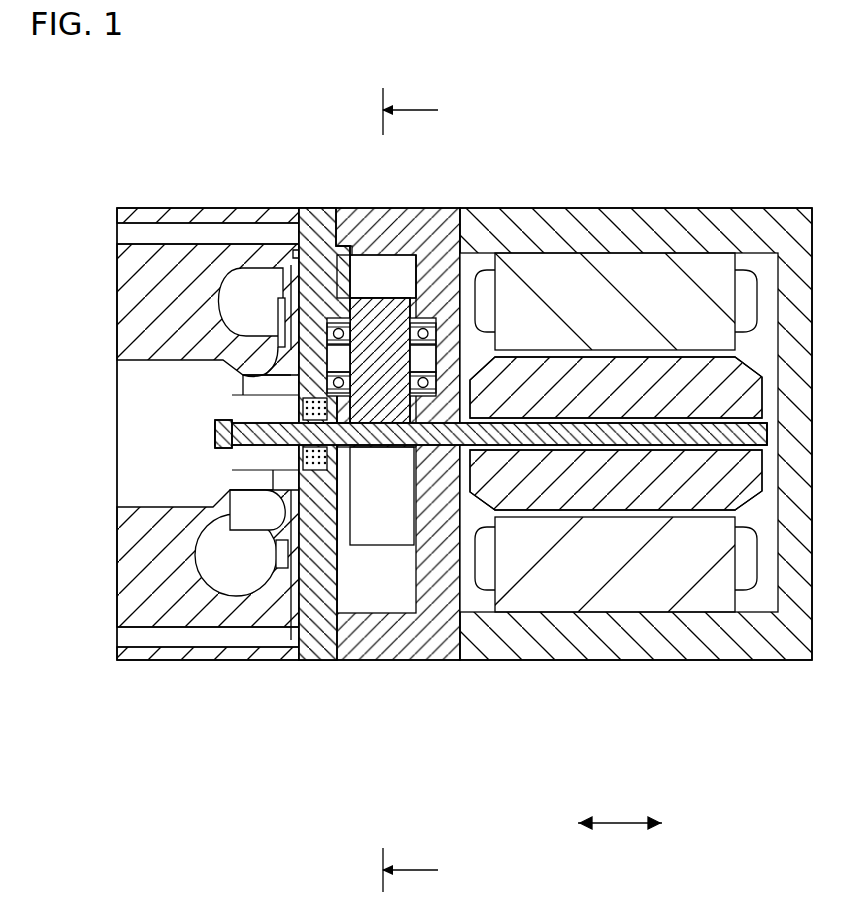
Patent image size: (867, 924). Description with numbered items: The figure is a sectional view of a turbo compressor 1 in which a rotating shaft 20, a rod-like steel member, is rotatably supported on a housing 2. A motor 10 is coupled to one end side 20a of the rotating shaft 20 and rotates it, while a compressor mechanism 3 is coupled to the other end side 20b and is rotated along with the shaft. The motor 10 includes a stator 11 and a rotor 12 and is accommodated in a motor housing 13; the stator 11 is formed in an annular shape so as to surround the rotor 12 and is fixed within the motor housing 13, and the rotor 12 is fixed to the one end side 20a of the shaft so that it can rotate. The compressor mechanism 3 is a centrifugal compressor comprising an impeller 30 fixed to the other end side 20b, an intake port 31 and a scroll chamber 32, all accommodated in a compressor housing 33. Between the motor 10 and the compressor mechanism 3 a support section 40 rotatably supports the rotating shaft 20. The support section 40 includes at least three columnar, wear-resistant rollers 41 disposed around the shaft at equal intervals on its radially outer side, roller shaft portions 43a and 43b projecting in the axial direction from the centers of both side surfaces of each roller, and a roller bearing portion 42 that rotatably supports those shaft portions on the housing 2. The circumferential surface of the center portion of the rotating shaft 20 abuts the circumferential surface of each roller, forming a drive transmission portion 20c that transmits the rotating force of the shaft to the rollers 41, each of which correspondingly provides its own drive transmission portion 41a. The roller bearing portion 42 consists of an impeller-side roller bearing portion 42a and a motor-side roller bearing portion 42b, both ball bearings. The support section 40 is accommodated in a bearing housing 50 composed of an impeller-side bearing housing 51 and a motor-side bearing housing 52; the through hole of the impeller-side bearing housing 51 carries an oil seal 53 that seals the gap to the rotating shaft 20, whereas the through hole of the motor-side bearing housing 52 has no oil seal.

The turbo compressor 1 is at (715, 143).
The housing 2 is at (482, 775).
The compressor mechanism 3 is at (242, 740).
The motor 10 is at (732, 735).
The stator 11 is at (673, 567).
The rotor 12 is at (600, 495).
The motor housing 13 is at (483, 655).
The rotating shaft 20 is at (388, 437).
The one end side 20a is at (767, 434).
The other end side 20b is at (213, 437).
The drive transmission portion 20c is at (330, 352).
The impeller 30 is at (235, 477).
The intake port 31 is at (132, 492).
The scroll chamber 32 is at (245, 573).
The compressor housing 33 is at (268, 660).
The support section 40 is at (399, 272).
The rollers 41 is at (380, 300).
The drive transmission portion 41a is at (303, 412).
The roller bearing portion 42 is at (322, 145).
The roller bearing portion 42a is at (333, 318).
The roller bearing portion 42b is at (330, 368).
The roller shaft portion 43a is at (322, 347).
The roller shaft portion 43b is at (437, 347).
The bearing housing 50 is at (422, 728).
The impeller-side bearing housing 51 is at (312, 655).
The motor-side bearing housing 52 is at (393, 648).
The oil seal 53 is at (303, 460).